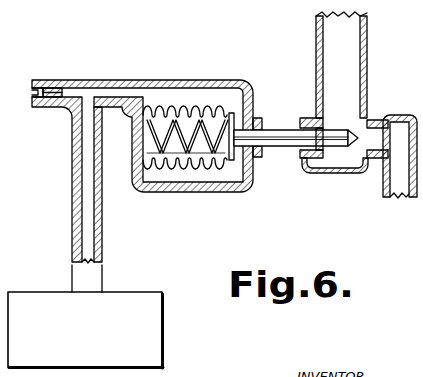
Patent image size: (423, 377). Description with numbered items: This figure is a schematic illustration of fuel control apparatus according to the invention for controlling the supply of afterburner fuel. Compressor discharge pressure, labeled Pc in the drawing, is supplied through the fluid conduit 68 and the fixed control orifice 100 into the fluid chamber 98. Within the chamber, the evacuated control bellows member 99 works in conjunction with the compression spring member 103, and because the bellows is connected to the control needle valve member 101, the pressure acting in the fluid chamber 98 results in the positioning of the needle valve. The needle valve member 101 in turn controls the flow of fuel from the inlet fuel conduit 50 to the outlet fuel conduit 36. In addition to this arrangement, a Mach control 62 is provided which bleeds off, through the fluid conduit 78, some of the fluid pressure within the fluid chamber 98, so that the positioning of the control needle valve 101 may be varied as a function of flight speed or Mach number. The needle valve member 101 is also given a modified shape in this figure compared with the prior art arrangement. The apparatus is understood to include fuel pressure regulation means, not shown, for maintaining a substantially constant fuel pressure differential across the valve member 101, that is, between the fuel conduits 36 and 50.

The outlet fuel conduit 36 is at (397, 178).
The inlet fuel conduit 50 is at (352, 44).
The Mach control 62 is at (147, 302).
The fluid conduit 68 is at (33, 97).
The fluid conduit 78 is at (101, 219).
The fluid chamber 98 is at (189, 97).
The control bellows member 99 is at (209, 168).
The fixed control orifice 100 is at (57, 80).
The control needle valve member 101 is at (340, 132).
The compression spring member 103 is at (228, 100).
The control pressure Pc is at (37, 80).